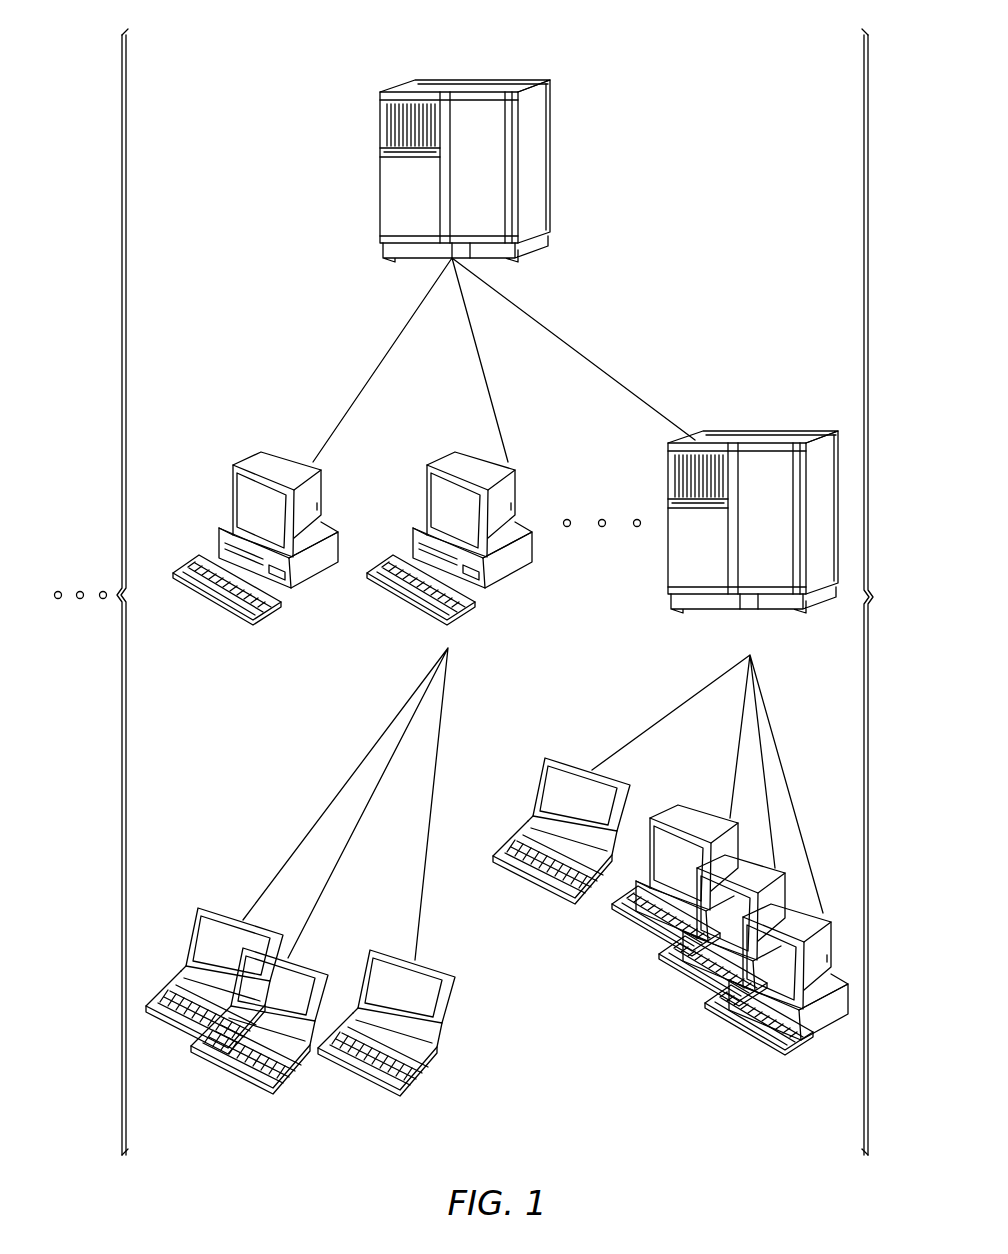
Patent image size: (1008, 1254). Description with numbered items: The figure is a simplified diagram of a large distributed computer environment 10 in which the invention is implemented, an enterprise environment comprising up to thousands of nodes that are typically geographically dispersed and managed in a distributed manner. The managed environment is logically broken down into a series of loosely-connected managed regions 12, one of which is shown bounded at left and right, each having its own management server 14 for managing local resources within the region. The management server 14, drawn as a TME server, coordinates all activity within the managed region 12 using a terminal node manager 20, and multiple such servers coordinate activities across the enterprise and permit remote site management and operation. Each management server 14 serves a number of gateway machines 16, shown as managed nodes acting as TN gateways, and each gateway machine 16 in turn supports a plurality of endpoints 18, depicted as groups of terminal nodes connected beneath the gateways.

The distributed computer environment 10 is at (212, 811).
The managed region 12 is at (878, 253).
The management server 14 is at (548, 91).
The gateway machine 16 is at (233, 485).
The endpoint 18 is at (467, 907).
The terminal node manager 20 is at (341, 84).